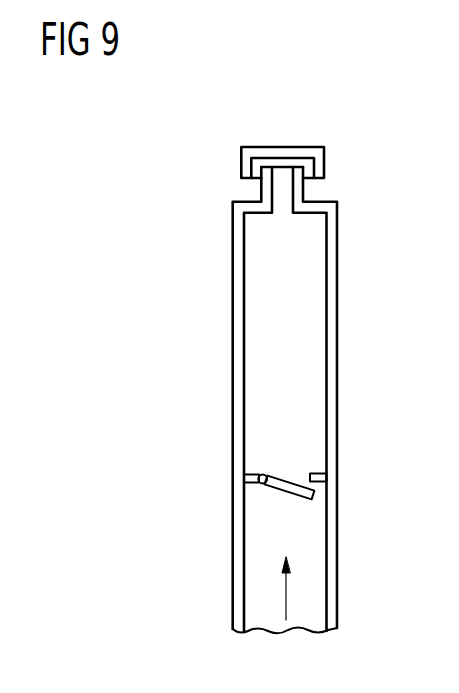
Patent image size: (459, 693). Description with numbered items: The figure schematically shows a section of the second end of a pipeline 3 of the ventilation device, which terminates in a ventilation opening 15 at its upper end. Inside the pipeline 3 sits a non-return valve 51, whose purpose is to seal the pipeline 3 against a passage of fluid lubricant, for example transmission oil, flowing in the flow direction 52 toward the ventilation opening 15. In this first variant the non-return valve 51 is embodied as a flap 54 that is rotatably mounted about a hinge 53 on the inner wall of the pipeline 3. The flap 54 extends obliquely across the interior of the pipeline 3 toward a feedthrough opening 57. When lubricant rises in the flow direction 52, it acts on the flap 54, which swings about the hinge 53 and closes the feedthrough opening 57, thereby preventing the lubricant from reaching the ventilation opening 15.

The ventilation opening 15 is at (283, 147).
The pipeline 3 is at (327, 334).
The non-return valve 51 is at (264, 473).
The flow direction 52 is at (287, 594).
The hinge 53 is at (264, 484).
The flap 54 is at (314, 492).
The feedthrough opening 57 is at (291, 472).